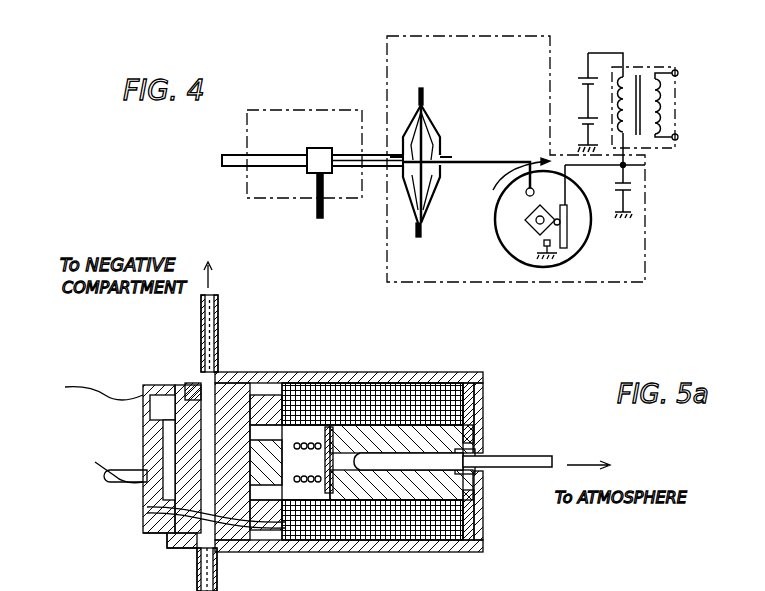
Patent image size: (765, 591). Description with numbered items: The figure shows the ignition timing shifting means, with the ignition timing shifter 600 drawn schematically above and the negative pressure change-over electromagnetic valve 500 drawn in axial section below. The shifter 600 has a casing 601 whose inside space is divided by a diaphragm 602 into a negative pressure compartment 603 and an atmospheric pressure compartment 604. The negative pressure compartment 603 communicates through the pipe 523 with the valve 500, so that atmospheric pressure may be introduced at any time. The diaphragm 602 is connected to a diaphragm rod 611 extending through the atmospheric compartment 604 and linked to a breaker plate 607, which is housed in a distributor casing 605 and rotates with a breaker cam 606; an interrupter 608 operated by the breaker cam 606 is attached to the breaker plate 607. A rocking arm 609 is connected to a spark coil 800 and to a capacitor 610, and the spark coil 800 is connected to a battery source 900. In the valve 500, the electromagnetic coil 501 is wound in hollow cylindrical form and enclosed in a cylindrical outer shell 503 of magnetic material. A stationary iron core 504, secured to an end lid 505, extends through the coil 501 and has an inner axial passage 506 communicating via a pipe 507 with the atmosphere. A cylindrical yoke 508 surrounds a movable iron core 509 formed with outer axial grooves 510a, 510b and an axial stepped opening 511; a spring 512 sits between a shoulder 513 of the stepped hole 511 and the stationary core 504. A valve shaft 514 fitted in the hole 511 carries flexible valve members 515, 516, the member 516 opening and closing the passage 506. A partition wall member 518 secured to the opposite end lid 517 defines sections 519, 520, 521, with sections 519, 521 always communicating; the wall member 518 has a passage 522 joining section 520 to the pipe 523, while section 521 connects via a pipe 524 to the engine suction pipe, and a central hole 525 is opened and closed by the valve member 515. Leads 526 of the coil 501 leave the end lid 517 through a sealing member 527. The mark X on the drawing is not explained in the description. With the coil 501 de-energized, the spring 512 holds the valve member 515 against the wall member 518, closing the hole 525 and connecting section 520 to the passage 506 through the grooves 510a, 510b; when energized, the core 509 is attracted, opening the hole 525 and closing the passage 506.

In FIG. 4, the negative pressure change-over electromagnetic valve 500 is at (300, 110).
In FIG. 5a, the negative pressure change-over electromagnetic valve 500 is at (62, 392).
In FIG. 4, the cylindrical outer shell 503 is at (318, 148).
In FIG. 5a, the cylindrical outer shell 503 is at (442, 375).
In FIG. 4, the pipe 507 is at (236, 168).
In FIG. 5a, the pipe 507 is at (548, 460).
In FIG. 4, the pipe 524 is at (318, 200).
In FIG. 4, the pipe 523 is at (372, 168).
In FIG. 5a, the pipe 523 is at (201, 310).
In FIG. 4, the ignition timing shifter 600 is at (648, 216).
In FIG. 4, the casing 601 is at (425, 115).
In FIG. 4, the diaphragm 602 is at (430, 143).
In FIG. 4, the negative pressure compartment 603 is at (410, 128).
In FIG. 4, the atmospheric pressure compartment 604 is at (432, 188).
In FIG. 4, the distributor casing 605 is at (547, 262).
In FIG. 4, the breaker cam 606 is at (530, 232).
In FIG. 4, the breaker plate 607 is at (503, 225).
In FIG. 4, the interrupter 608 is at (560, 247).
In FIG. 4, the rocking arm 609 is at (567, 226).
In FIG. 4, the capacitor 610 is at (632, 188).
In FIG. 4, the diaphragm rod 611 is at (480, 162).
In FIG. 4, the spark coil 800 is at (680, 73).
In FIG. 4, the battery source 900 is at (582, 100).
In FIG. 5a, the electromagnetic coil 501 is at (458, 550).
In FIG. 5a, the stationary iron core 504 is at (440, 435).
In FIG. 5a, the end lid 505 is at (480, 390).
In FIG. 5a, the inner axial passage 506 is at (468, 458).
In FIG. 5a, the cylindrical yoke 508 is at (268, 395).
In FIG. 5a, the movable iron core 509 is at (332, 432).
In FIG. 5a, the outer axial groove 510a is at (300, 383).
In FIG. 5a, the outer axial groove 510b is at (305, 541).
In FIG. 5a, the axial stepped opening 511 is at (340, 541).
In FIG. 5a, the spring 512 is at (398, 522).
In FIG. 5a, the shoulder 513 is at (318, 438).
In FIG. 5a, the valve shaft 514 is at (290, 462).
In FIG. 5a, the valve member 515 is at (237, 383).
In FIG. 5a, the valve member 516 is at (480, 505).
In FIG. 5a, the end lid 517 is at (150, 412).
In FIG. 5a, the partition wall member 518 is at (170, 385).
In FIG. 5a, the section 519 is at (125, 485).
In FIG. 5a, the section 520 is at (222, 552).
In FIG. 5a, the section 521 is at (262, 548).
In FIG. 5a, the passage 522 is at (195, 383).
In FIG. 5a, the central hole 525 is at (185, 455).
In FIG. 5a, the leads 526 is at (170, 544).
In FIG. 5a, the sealing member 527 is at (147, 516).
In FIG. 5a, the reference point X is at (92, 455).